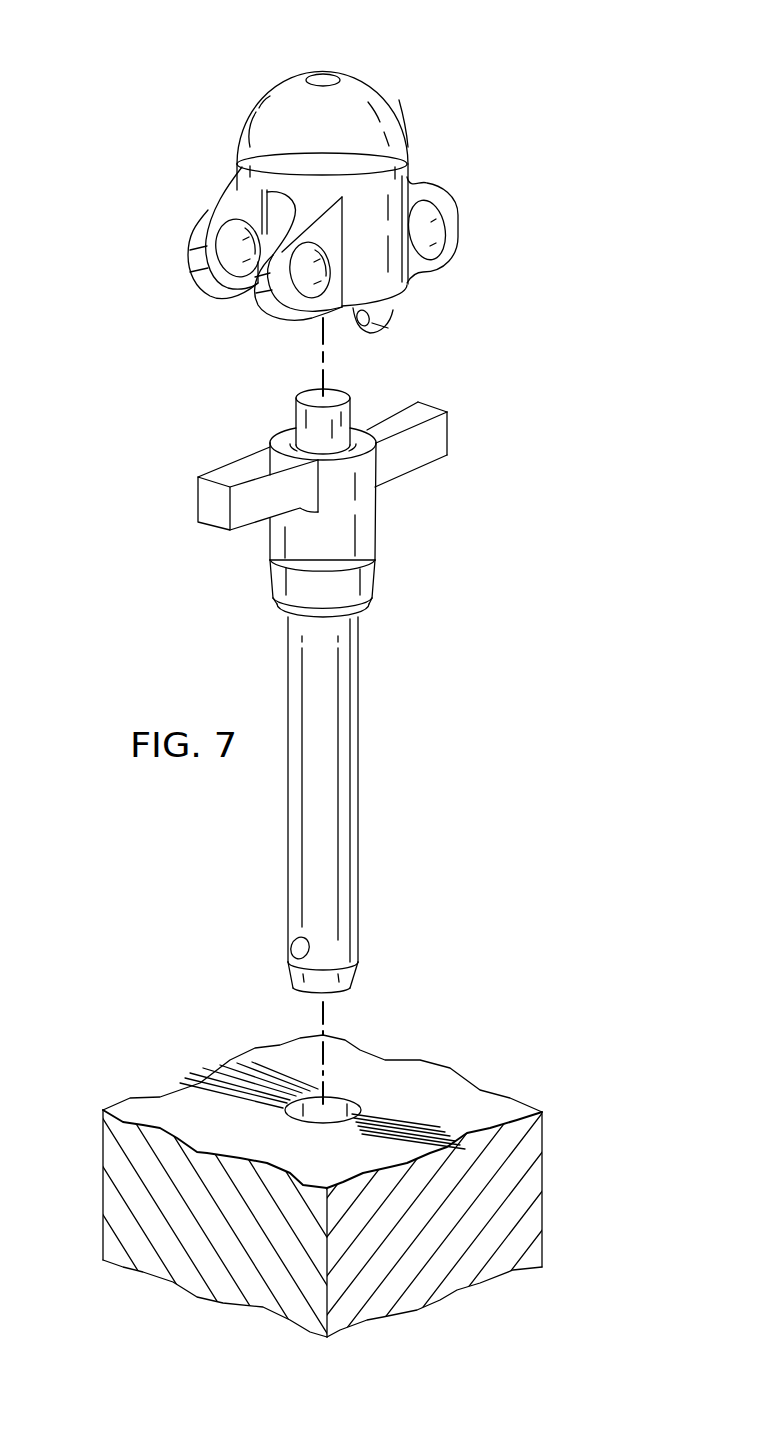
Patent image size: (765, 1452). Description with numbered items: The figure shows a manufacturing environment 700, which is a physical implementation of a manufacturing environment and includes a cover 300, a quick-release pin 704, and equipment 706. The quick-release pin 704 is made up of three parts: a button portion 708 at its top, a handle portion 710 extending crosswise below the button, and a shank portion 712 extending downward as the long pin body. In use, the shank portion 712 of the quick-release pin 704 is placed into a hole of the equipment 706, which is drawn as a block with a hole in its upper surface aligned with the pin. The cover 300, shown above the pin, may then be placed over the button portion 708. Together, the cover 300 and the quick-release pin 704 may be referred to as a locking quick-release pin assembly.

The manufacturing environment 700 is at (133, 62).
The cover 300 is at (263, 82).
The quick-release pin 704 is at (188, 398).
The equipment 706 is at (428, 1082).
The button portion 708 is at (296, 410).
The handle portion 710 is at (395, 415).
The shank portion 712 is at (358, 785).